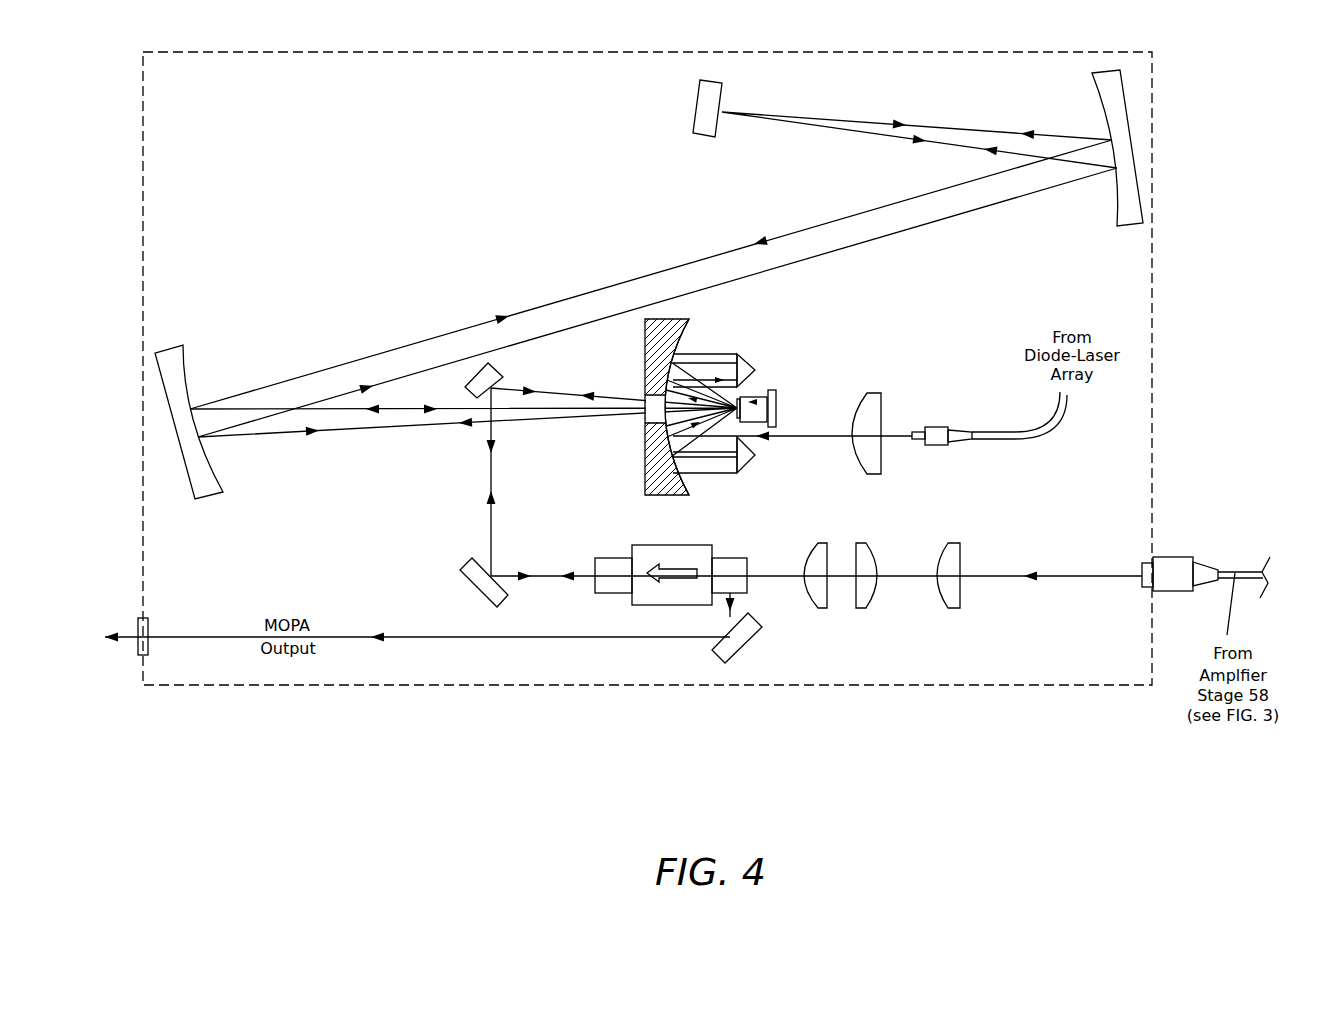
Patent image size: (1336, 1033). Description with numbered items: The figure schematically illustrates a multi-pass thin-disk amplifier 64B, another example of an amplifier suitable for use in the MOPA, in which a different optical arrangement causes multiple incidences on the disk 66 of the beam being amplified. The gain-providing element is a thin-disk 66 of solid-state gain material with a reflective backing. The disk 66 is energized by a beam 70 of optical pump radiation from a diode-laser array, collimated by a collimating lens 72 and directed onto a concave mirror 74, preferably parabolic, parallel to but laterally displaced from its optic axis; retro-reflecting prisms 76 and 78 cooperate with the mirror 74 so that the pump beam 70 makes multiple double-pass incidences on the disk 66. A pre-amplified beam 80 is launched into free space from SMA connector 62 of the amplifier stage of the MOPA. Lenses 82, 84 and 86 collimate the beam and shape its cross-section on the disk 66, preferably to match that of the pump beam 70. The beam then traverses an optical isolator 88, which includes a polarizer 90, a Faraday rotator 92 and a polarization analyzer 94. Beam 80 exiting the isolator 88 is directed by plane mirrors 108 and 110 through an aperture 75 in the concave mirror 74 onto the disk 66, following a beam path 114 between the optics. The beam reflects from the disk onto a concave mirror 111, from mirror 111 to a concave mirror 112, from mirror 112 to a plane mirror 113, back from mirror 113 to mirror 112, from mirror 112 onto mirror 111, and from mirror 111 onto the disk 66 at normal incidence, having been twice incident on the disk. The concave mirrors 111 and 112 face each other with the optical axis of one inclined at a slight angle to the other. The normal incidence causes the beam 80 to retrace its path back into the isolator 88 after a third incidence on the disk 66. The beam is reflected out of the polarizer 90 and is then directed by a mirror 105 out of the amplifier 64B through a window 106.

The SMA connector 62 is at (1182, 568).
The multi-pass thin-disk amplifier 64B is at (768, 698).
The thin-disk 66 is at (786, 428).
The beam of optical pump radiation 70 is at (835, 392).
The collimating lens 72 is at (882, 408).
The concave mirror 74 is at (689, 403).
The aperture 75 is at (656, 385).
The retro-reflecting prism 76 is at (756, 365).
The retro-reflecting prism 78 is at (750, 463).
The pre-amplified beam 80 is at (490, 473).
The lens 82 is at (950, 593).
The lens 84 is at (869, 592).
The lens 86 is at (820, 548).
The optical isolator 88 is at (669, 551).
The polarizer 90 is at (723, 560).
The Faraday rotator 92 is at (670, 550).
The polarization analyzer 94 is at (617, 562).
The mirror 105 is at (745, 633).
The window 106 is at (147, 622).
The plane mirror 108 is at (460, 573).
The plane mirror 110 is at (500, 377).
The concave mirror 111 is at (190, 378).
The concave mirror 112 is at (1095, 102).
The plane mirror 113 is at (722, 100).
The beam path 114 is at (407, 403).